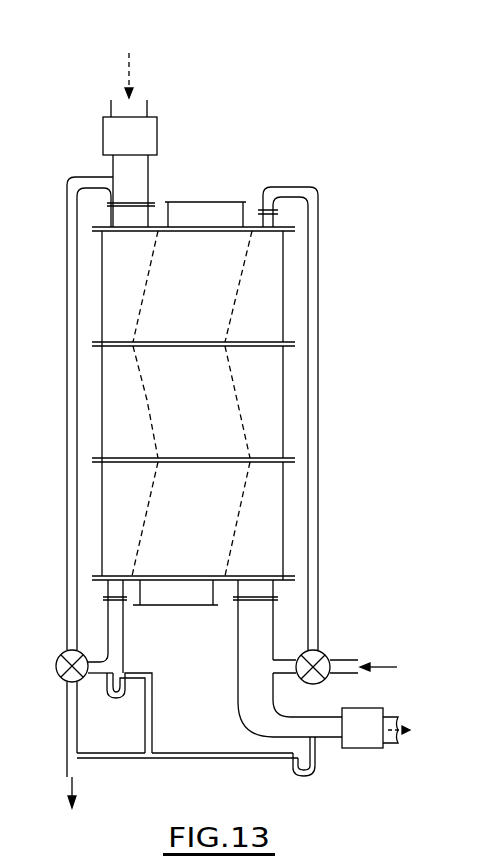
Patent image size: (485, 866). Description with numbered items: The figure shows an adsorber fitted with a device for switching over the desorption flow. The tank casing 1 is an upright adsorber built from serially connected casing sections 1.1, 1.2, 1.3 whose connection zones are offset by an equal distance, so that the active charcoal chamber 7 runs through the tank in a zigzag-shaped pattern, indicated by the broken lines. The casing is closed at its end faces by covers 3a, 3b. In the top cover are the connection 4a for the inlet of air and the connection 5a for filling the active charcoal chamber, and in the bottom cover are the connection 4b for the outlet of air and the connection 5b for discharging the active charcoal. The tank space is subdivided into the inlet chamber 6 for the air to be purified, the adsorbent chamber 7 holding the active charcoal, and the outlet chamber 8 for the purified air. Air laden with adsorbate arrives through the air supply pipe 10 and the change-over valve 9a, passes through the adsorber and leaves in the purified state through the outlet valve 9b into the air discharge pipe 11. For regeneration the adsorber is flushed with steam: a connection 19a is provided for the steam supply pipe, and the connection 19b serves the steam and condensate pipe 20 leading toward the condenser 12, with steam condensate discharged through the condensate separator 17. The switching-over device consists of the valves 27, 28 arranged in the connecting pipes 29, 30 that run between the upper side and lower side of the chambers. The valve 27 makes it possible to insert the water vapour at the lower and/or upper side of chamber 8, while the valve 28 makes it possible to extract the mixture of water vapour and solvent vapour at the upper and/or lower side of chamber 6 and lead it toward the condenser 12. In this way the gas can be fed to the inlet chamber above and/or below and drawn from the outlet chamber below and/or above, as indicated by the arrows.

The tank casing 1 is at (102, 512).
The casing section 1.1 is at (273, 293).
The casing section 1.2 is at (272, 401).
The casing section 1.3 is at (273, 515).
The cover 3a is at (106, 222).
The cover 3b is at (286, 582).
The connection 4a is at (135, 213).
The connection 4b is at (238, 608).
The connection 5a is at (210, 211).
The connection 5b is at (165, 601).
The inlet chamber 6 is at (118, 281).
The adsorbent chamber 7 is at (232, 421).
The outlet chamber 8 is at (270, 320).
The change-over valve 9a is at (115, 140).
The change-over valve 9b is at (364, 742).
The air supply pipe 10 is at (147, 103).
The air discharge pipe 11 is at (389, 717).
The condenser 12 is at (75, 810).
The condensate separator 17 is at (115, 704).
The connection 19a is at (270, 220).
The connection 19b is at (110, 591).
The steam and condensate pipe 20 is at (67, 727).
The valve 27 is at (318, 654).
The valve 28 is at (57, 668).
The connecting pipe 29 is at (318, 417).
The connecting pipe 30 is at (67, 406).